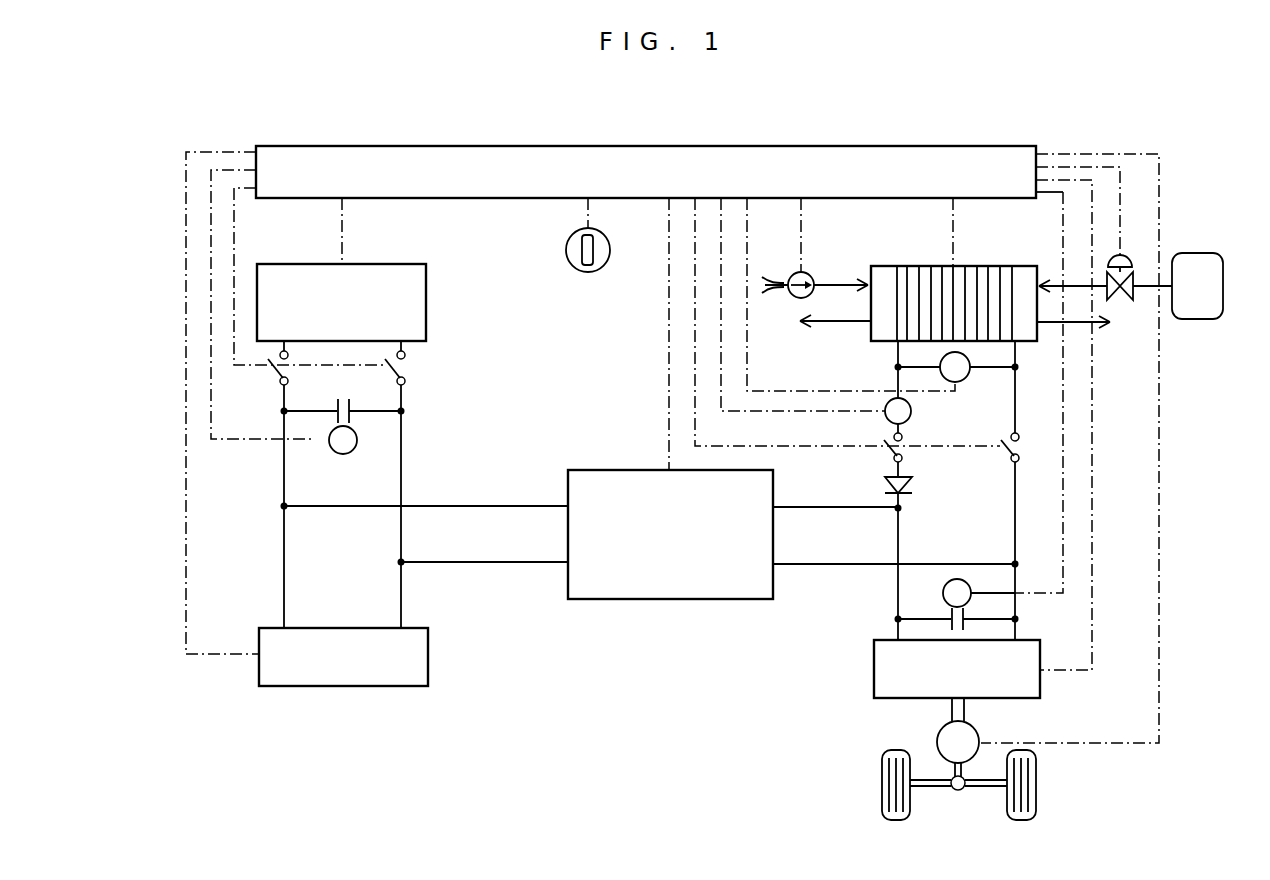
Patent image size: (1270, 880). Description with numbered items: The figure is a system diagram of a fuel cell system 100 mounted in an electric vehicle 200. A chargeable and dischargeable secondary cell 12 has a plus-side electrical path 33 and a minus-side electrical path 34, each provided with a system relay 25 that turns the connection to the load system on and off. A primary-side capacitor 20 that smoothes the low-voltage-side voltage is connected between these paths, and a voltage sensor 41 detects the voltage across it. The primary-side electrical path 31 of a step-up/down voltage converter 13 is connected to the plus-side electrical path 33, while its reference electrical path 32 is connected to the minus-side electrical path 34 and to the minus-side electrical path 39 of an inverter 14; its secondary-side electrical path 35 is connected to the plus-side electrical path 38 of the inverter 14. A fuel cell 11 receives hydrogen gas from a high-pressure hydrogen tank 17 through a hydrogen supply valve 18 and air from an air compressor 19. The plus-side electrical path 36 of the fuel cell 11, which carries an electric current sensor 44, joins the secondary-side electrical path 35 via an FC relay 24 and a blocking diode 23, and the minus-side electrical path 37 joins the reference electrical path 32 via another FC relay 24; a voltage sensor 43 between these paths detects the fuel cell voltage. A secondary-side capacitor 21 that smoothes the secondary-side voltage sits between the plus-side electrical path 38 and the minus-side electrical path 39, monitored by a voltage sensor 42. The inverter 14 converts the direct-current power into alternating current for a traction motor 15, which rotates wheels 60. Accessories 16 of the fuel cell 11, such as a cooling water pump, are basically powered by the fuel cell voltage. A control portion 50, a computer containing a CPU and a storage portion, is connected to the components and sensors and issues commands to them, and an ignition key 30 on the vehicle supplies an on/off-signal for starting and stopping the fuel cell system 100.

The fuel cell system 100 is at (160, 145).
The electric vehicle 200 is at (1180, 682).
The control portion 50 is at (935, 146).
The secondary cell 12 is at (398, 264).
The ignition key 30 is at (594, 272).
The plus-side electrical path 33 is at (284, 428).
The minus-side electrical path 34 is at (403, 440).
The primary-side capacitor 20 is at (338, 398).
The system relay 25 is at (406, 360).
The voltage sensor 41 is at (333, 449).
The primary-side electrical path 31 is at (512, 506).
The reference electrical path 32 is at (494, 568).
The step-up/down voltage converter 13 is at (670, 600).
The accessories 16 is at (357, 688).
The air compressor 19 is at (808, 274).
The fuel cell 11 is at (1025, 266).
The hydrogen supply valve 18 is at (1132, 285).
The high-pressure hydrogen tank 17 is at (1200, 253).
The plus-side electrical path 36 is at (898, 354).
The minus-side electrical path 37 is at (1016, 378).
The voltage sensor 43 is at (970, 379).
The electric current sensor 44 is at (911, 412).
The FC relay 24 is at (885, 445).
The blocking diode 23 is at (912, 485).
The secondary-side electrical path 35 is at (800, 506).
The plus-side electrical path 38 is at (898, 594).
The minus-side electrical path 39 is at (1016, 600).
The voltage sensor 42 is at (968, 580).
The secondary-side capacitor 21 is at (950, 627).
The inverter 14 is at (874, 680).
The traction motor 15 is at (938, 735).
The wheels 60 is at (1038, 770).